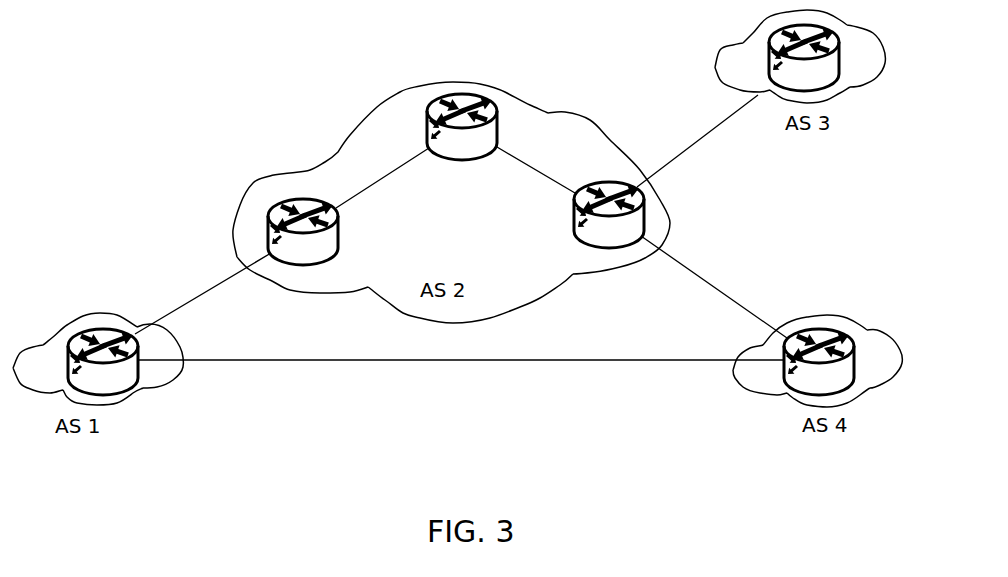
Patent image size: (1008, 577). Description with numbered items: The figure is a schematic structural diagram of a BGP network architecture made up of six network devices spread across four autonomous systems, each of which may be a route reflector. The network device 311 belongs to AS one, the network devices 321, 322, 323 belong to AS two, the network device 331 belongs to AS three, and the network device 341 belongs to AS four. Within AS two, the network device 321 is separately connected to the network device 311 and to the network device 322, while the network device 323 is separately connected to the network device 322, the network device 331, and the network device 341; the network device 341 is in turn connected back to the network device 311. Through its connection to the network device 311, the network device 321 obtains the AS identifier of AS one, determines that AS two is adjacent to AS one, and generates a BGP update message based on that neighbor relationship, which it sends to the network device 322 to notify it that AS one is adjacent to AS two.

The network device 311 is at (122, 330).
The network device 321 is at (310, 195).
The network device 322 is at (485, 100).
The network device 323 is at (652, 212).
The network device 331 is at (828, 27).
The network device 341 is at (852, 328).